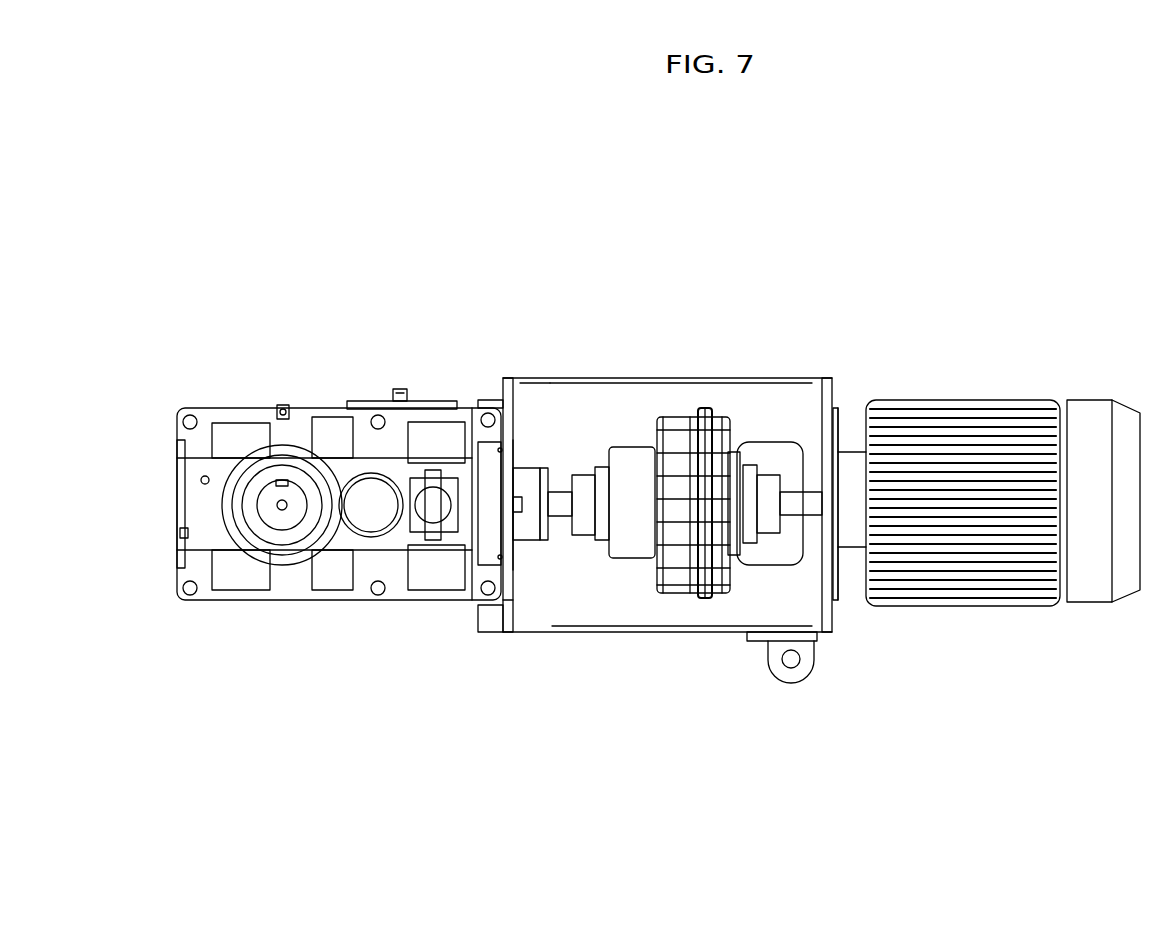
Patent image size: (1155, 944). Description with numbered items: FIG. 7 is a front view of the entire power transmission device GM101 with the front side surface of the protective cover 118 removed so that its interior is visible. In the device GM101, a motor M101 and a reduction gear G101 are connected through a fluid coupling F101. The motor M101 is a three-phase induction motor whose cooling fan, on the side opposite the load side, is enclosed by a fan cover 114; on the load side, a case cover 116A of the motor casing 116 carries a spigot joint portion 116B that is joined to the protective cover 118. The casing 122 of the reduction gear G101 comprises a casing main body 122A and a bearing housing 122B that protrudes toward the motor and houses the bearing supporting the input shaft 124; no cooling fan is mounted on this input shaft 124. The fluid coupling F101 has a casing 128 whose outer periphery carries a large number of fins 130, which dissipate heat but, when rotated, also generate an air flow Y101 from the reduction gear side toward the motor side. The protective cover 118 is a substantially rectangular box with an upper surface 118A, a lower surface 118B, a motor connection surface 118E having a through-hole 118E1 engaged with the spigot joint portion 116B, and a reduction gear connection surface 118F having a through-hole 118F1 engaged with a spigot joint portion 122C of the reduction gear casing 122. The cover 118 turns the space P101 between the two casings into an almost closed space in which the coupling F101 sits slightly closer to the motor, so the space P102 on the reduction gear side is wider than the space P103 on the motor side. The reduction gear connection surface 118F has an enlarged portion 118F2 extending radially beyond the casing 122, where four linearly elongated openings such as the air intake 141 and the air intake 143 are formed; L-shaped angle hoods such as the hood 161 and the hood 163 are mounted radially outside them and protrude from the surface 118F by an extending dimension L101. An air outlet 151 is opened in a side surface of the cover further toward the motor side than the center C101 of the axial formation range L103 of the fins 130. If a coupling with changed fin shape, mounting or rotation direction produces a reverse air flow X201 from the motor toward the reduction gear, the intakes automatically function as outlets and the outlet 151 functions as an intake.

The reduction gear G101 is at (350, 400).
The casing 122 is at (426, 398).
The casing main body 122A is at (446, 404).
The bearing housing 122B is at (532, 445).
The spigot joint portion 122C is at (503, 433).
The hood 161 is at (482, 399).
The air intake 141 is at (523, 465).
The hood 163 is at (488, 612).
The protective cover 118 is at (642, 513).
The reduction gear connection surface 118F is at (493, 574).
The through-hole 118F1 is at (512, 553).
The enlarged portion 118F2 is at (473, 612).
The upper surface 118A is at (780, 380).
The lower surface 118B is at (612, 634).
The motor connection surface 118E is at (834, 610).
The through-hole 118E1 is at (758, 560).
The input shaft 124 is at (558, 512).
The casing 128 is at (662, 408).
The fins 130 is at (682, 414).
The air outlet 151 is at (766, 560).
The space P101 is at (623, 398).
The space P102 is at (640, 436).
The space P103 is at (797, 429).
The air flow X201 is at (640, 608).
The air flow Y101 is at (606, 633).
The air intake 143 is at (512, 556).
The fluid coupling F101 is at (622, 655).
The center C101 is at (698, 410).
The power transmission device GM101 is at (648, 264).
The formation range L103 is at (723, 378).
The extending dimension L101 is at (503, 600).
The casing 116 is at (907, 468).
The case cover 116A is at (840, 405).
The spigot joint portion 116B is at (828, 410).
The motor M101 is at (985, 394).
The fan cover 114 is at (1090, 399).